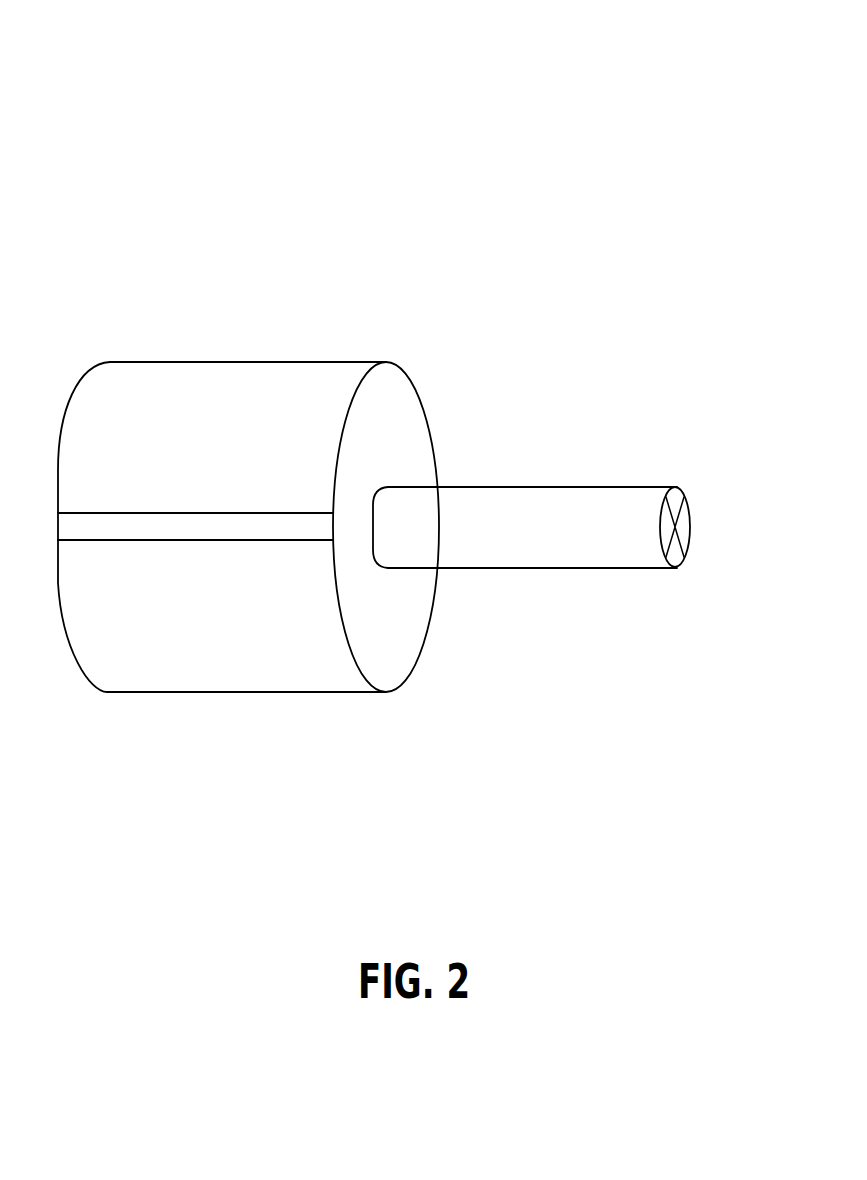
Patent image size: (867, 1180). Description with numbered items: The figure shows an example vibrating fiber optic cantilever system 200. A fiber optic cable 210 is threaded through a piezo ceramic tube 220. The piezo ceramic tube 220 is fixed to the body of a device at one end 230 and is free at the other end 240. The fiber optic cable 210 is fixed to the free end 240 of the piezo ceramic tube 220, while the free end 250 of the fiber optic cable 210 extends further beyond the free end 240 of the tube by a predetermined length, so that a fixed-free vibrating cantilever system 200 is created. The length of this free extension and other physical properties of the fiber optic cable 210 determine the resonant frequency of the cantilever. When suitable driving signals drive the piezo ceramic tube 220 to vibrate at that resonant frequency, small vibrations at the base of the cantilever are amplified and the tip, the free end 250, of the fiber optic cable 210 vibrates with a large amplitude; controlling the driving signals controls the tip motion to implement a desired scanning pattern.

The vibrating fiber optic cantilever system 200 is at (660, 52).
The fiber optic cable 210 is at (502, 545).
The piezo ceramic tube 220 is at (215, 640).
The fixed end of piezo ceramic tube 230 is at (126, 362).
The free end of piezo ceramic tube 240 is at (393, 360).
The free end of fiber optic cable 250 is at (673, 478).